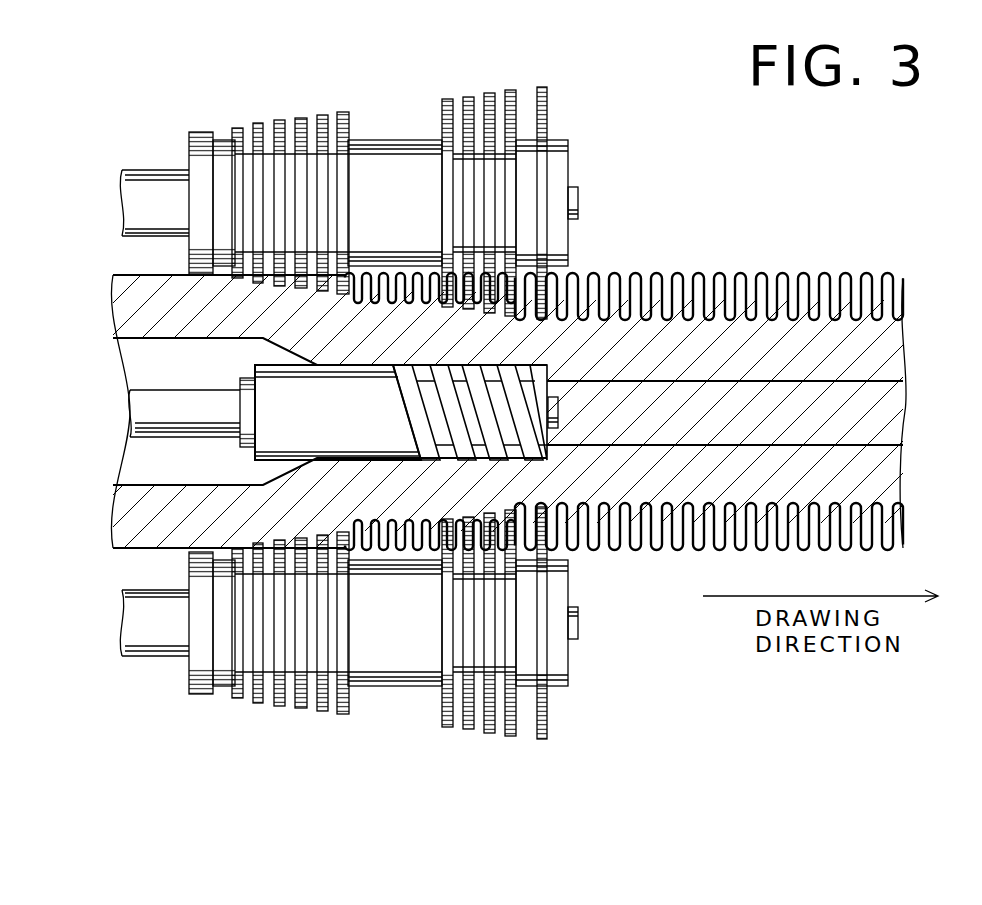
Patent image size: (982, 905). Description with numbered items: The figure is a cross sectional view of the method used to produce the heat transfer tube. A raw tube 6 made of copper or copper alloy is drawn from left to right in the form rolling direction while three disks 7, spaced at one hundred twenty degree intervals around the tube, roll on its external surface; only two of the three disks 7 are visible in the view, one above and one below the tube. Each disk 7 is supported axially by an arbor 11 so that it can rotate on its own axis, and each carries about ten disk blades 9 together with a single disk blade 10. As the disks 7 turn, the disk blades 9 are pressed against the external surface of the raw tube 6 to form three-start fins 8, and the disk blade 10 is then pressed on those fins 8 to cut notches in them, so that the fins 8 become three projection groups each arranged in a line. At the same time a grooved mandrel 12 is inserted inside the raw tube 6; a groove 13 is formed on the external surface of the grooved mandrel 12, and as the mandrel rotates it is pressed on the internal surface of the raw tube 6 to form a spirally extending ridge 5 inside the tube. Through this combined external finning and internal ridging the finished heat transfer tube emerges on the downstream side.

The spirally extending ridge 5 is at (885, 413).
The raw tube 6 is at (137, 309).
The disk 7 is at (163, 109).
The fins 8 is at (545, 282).
The disk blades 9 is at (515, 103).
The disk blade 10 is at (546, 102).
The arbor 11 is at (151, 190).
The grooved mandrel 12 is at (275, 446).
The groove 13 is at (250, 411).